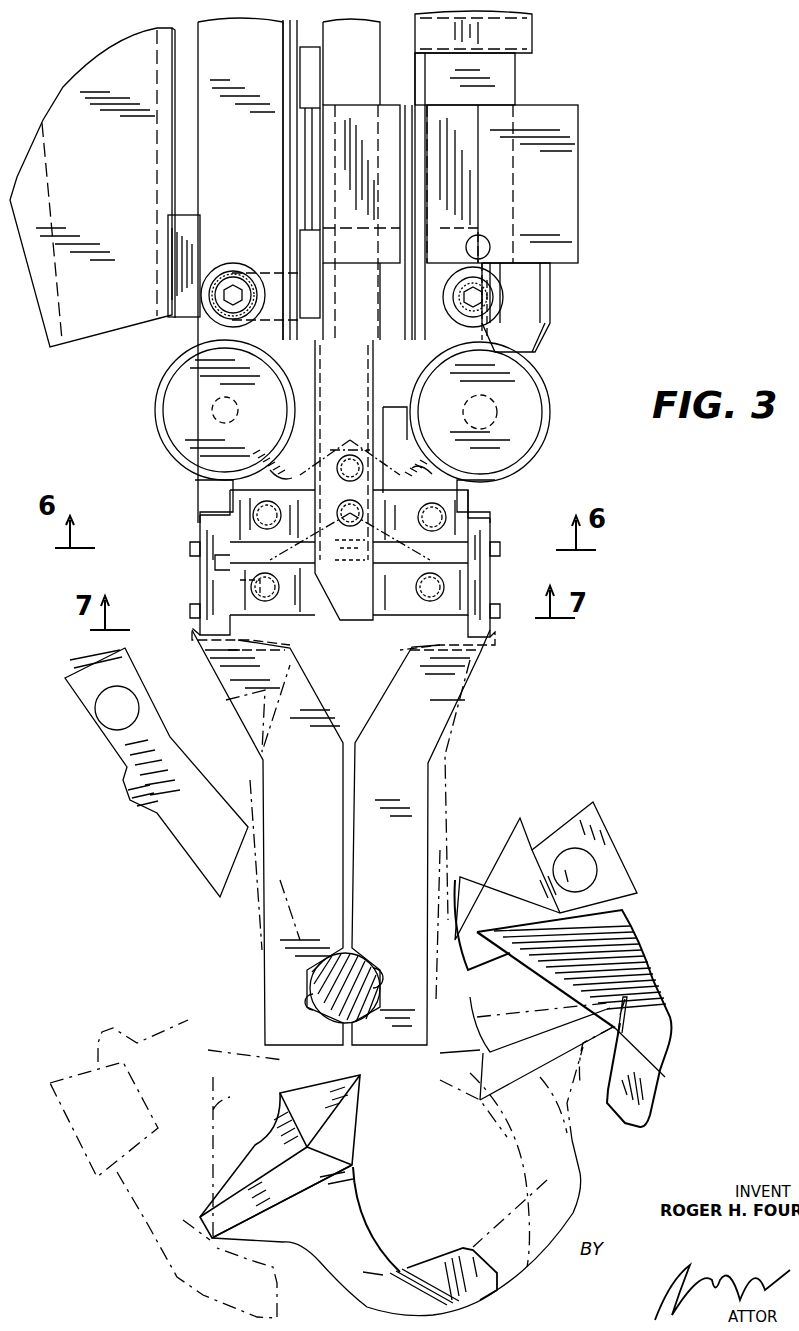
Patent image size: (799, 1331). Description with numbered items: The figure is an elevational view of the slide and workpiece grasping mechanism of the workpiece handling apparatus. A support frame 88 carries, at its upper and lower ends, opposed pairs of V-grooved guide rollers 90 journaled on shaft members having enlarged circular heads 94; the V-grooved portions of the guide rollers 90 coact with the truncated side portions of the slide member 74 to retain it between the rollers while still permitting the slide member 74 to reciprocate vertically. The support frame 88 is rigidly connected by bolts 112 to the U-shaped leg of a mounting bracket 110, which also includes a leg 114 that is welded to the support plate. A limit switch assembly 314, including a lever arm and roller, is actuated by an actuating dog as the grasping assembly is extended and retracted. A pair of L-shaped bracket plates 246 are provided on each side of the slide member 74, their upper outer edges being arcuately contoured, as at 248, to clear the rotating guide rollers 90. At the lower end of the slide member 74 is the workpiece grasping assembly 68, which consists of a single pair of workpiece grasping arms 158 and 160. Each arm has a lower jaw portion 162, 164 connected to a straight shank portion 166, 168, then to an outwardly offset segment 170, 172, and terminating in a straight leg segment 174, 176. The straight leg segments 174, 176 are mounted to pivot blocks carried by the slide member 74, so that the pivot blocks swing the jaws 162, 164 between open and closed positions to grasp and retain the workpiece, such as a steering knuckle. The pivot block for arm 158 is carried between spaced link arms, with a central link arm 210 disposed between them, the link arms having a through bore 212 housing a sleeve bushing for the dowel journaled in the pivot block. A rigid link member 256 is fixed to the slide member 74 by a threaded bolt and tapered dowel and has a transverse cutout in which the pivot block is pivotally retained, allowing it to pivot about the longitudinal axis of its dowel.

The workpiece grasping assembly 68 is at (603, 763).
The slide member 74 is at (410, 340).
The support frame 88 is at (198, 340).
The V-grooved guide rollers 90 is at (163, 428).
The enlarged circular heads 94 is at (168, 398).
The mounting bracket 110 is at (266, 275).
The bolts 112 is at (240, 275).
The leg 114 is at (168, 215).
The workpiece grasping arm 158 is at (262, 756).
The workpiece grasping arm 160 is at (432, 765).
The lower jaw portion 162 is at (313, 1010).
The lower jaw portion 164 is at (375, 975).
The straight shank portion 166 is at (263, 772).
The straight shank portion 168 is at (428, 820).
The outwardly offset segment 170 is at (222, 672).
The outwardly offset segment 172 is at (482, 670).
The straight leg segment 174 is at (200, 577).
The straight leg segment 176 is at (490, 577).
The central link arm 210 is at (372, 468).
The through bore 212 is at (300, 492).
The L-shaped bracket plates 246 is at (210, 483).
The arcuately contoured edge 248 is at (272, 446).
The rigid link member 256 is at (322, 615).
The limit switch assembly 314 is at (550, 325).